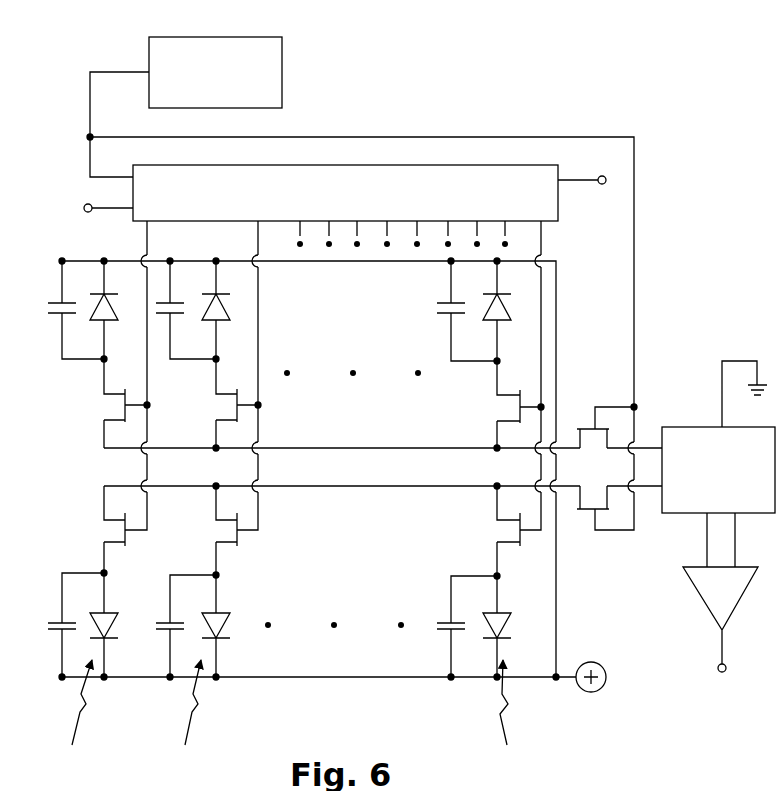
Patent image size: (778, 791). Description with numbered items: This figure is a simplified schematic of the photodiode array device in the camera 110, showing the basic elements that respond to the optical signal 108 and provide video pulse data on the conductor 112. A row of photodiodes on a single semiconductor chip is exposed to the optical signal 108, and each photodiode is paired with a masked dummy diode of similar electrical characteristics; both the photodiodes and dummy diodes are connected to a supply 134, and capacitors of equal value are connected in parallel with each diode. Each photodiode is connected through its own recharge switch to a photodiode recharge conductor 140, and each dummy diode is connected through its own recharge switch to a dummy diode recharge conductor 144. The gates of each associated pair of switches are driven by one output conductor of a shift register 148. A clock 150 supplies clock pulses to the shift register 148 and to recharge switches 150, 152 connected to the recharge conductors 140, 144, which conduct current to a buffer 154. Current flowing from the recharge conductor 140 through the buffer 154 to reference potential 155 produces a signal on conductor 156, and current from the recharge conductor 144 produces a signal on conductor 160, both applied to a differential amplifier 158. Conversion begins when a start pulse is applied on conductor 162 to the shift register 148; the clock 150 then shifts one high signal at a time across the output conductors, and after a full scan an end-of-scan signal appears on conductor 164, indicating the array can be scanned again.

The optical signal 108 is at (82, 715).
The camera 110 is at (93, 458).
The conductor 112 is at (725, 665).
The supply 134 is at (557, 297).
The photodiode recharge conductor 140 is at (388, 486).
The dummy diode recharge conductor 144 is at (378, 448).
The shift register 148 is at (501, 204).
The clock 150 is at (282, 72).
The recharge switch 152 is at (586, 428).
The buffer 154 is at (692, 427).
The reference potential 155 is at (760, 395).
The conductor 156 is at (707, 536).
The differential amplifier 158 is at (710, 608).
The conductor 160 is at (735, 538).
The conductor 162 is at (87, 204).
The conductor 164 is at (610, 160).